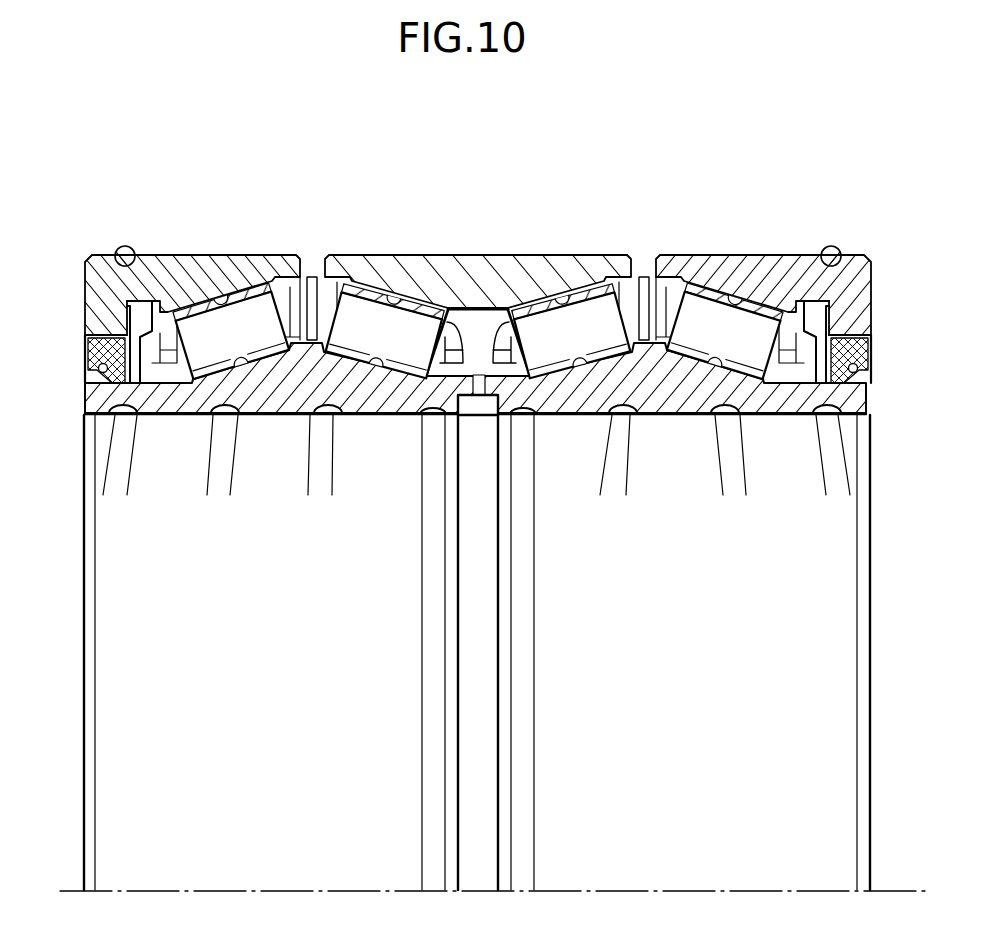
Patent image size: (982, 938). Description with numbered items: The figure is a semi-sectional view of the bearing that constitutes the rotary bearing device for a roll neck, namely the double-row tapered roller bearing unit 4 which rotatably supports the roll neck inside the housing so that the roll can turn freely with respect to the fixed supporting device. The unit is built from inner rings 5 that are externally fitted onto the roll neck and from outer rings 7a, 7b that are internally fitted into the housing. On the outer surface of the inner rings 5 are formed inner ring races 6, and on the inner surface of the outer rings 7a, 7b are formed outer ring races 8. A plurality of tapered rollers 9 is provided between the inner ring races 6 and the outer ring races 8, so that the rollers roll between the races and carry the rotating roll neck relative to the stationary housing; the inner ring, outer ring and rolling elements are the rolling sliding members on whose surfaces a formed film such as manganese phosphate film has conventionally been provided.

The double-row tapered roller bearing unit 4 is at (492, 509).
The inner ring 5 is at (190, 402).
The inner ring race 6 is at (368, 357).
The outer ring 7a is at (470, 270).
The outer ring 7b is at (197, 257).
The outer ring race 8 is at (228, 296).
The tapered roller 9 is at (282, 306).